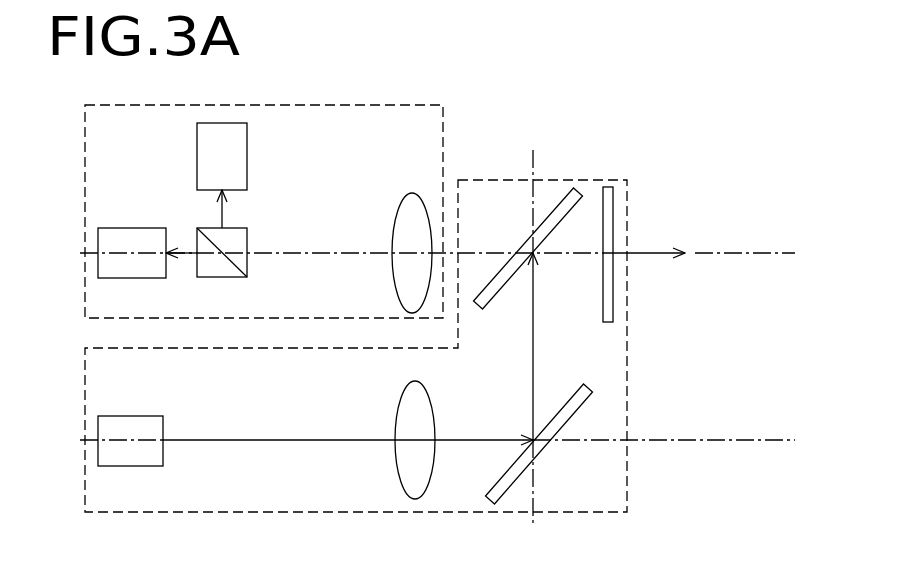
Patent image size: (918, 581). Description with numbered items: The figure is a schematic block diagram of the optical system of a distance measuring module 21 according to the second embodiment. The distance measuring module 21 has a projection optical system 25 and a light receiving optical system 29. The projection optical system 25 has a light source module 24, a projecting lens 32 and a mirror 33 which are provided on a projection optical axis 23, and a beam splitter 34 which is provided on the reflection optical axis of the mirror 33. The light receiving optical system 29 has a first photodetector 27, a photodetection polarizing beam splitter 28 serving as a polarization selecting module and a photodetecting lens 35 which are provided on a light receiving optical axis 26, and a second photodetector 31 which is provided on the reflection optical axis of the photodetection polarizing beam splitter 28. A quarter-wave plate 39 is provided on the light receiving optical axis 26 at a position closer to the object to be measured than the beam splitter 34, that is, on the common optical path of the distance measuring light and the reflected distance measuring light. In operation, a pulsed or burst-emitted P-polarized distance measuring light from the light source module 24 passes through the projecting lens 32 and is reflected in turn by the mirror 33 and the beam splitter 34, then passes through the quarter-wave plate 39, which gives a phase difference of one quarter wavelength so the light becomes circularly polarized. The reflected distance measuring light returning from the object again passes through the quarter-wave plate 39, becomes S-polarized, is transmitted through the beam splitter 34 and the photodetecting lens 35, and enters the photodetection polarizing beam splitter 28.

The distance measuring module 21 is at (679, 118).
The projection optical axis 23 is at (675, 440).
The light source module 24 is at (163, 455).
The projection optical system 25 is at (328, 513).
The light receiving optical axis 26 is at (735, 255).
The first photodetector 27 is at (142, 228).
The photodetection polarizing beam splitter 28 is at (247, 237).
The light receiving optical system 29 is at (443, 125).
The second photodetector 31 is at (197, 148).
The projecting lens 32 is at (395, 400).
The mirror 33 is at (563, 400).
The beam splitter 34 is at (500, 302).
The photodetecting lens 35 is at (392, 225).
The quarter-wave plate 39 is at (613, 215).